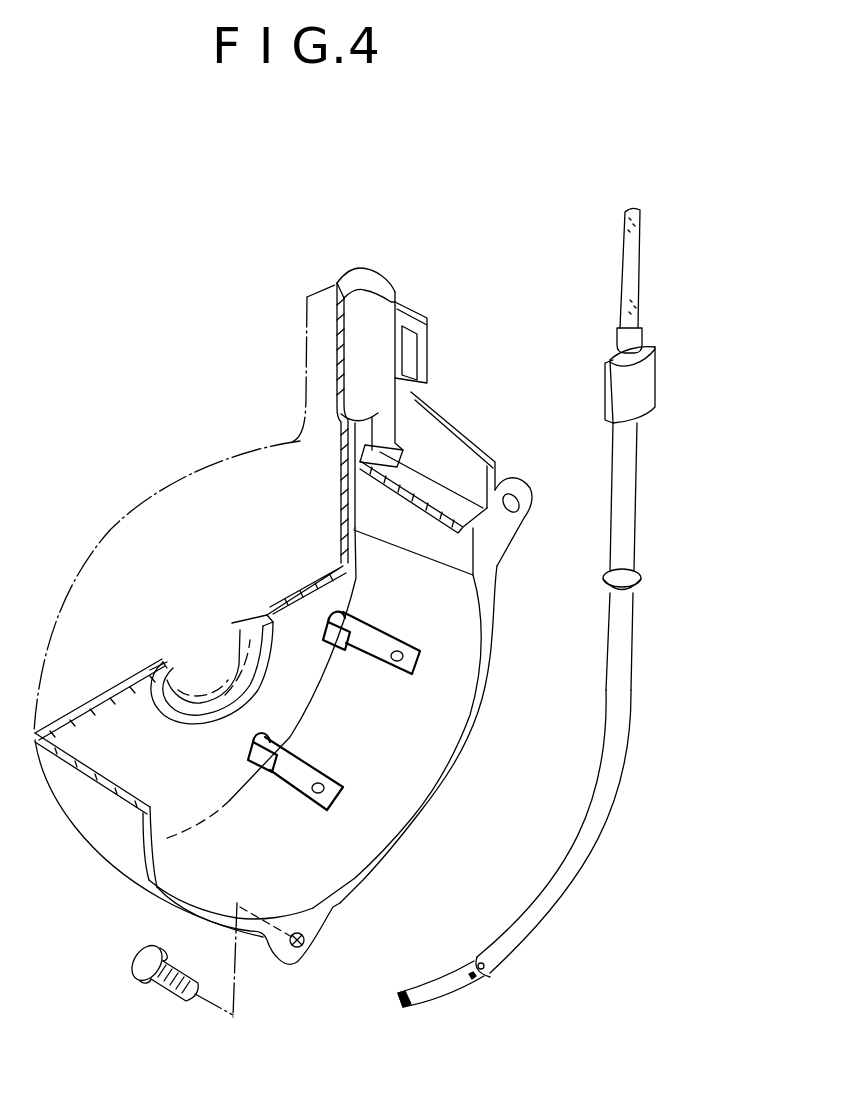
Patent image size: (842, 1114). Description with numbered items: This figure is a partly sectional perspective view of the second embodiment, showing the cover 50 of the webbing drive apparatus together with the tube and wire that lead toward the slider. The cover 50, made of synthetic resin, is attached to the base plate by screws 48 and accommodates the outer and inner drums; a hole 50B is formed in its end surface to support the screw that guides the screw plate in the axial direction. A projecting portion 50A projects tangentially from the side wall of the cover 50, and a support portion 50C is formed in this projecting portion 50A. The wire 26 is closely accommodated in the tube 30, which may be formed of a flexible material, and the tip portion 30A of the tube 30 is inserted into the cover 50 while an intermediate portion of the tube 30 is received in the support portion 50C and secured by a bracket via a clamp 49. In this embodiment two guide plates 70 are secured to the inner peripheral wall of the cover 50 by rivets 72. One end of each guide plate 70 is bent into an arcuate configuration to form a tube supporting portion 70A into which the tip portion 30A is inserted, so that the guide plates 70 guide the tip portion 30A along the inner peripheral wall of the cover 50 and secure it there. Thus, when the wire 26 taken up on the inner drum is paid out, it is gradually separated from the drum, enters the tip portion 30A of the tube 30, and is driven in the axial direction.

The wire 26 is at (638, 264).
The tube 30 is at (638, 487).
The tip portion of the tube 30A is at (597, 850).
The screws 48 is at (165, 992).
The clamp 49 is at (638, 402).
The cover 50 is at (352, 860).
The projecting portion 50A is at (386, 284).
The hole 50B is at (195, 677).
The support portion 50C is at (348, 338).
The guide plate 70 is at (372, 640).
The tube supporting portion 70A is at (372, 662).
The rivets 72 is at (420, 652).